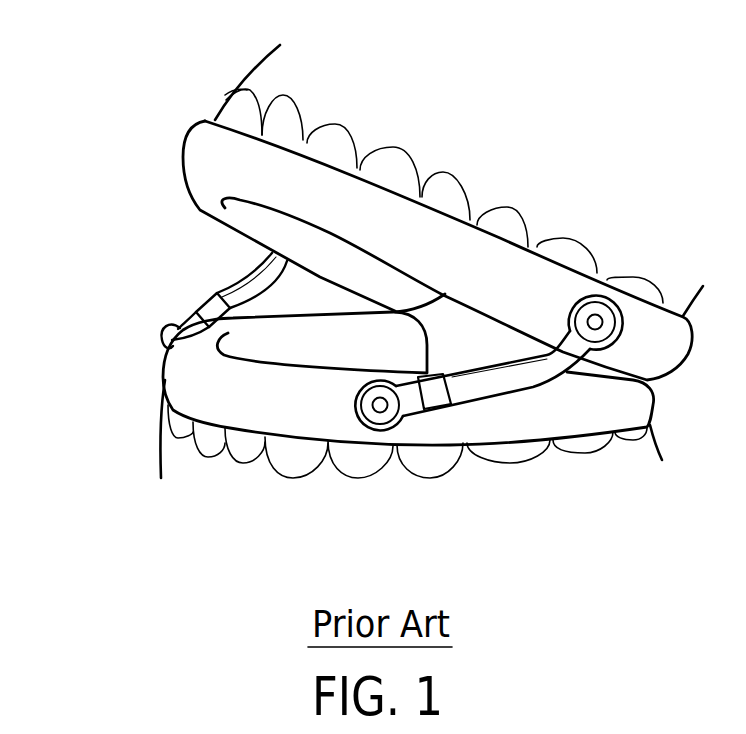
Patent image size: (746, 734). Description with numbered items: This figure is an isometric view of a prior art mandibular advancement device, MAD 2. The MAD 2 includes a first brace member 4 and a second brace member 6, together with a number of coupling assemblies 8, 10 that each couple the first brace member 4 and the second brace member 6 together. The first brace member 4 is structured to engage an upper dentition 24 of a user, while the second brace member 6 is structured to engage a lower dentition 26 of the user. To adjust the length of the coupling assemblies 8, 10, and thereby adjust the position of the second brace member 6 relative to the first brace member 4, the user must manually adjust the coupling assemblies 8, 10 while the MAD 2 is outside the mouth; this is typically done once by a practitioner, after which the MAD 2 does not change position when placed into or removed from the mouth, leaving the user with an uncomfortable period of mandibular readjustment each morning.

The prior art MAD 2 is at (90, 238).
The first brace member 4 is at (200, 177).
The second brace member 6 is at (185, 372).
The coupling assembly 8 is at (507, 377).
The coupling assembly 10 is at (250, 287).
The upper dentition 24 is at (388, 115).
The lower dentition 26 is at (247, 468).